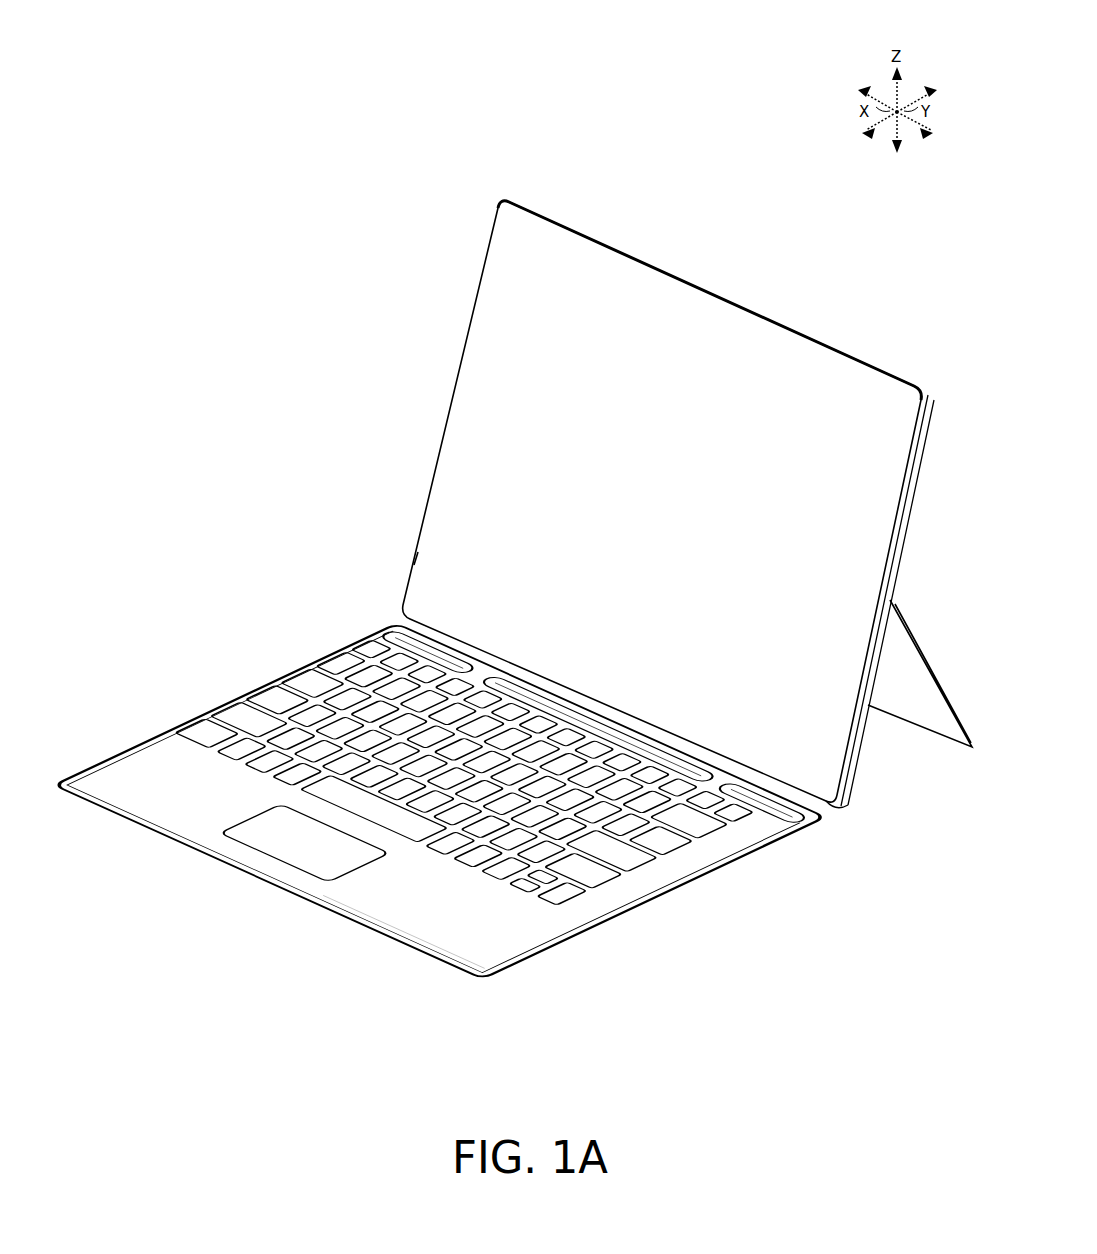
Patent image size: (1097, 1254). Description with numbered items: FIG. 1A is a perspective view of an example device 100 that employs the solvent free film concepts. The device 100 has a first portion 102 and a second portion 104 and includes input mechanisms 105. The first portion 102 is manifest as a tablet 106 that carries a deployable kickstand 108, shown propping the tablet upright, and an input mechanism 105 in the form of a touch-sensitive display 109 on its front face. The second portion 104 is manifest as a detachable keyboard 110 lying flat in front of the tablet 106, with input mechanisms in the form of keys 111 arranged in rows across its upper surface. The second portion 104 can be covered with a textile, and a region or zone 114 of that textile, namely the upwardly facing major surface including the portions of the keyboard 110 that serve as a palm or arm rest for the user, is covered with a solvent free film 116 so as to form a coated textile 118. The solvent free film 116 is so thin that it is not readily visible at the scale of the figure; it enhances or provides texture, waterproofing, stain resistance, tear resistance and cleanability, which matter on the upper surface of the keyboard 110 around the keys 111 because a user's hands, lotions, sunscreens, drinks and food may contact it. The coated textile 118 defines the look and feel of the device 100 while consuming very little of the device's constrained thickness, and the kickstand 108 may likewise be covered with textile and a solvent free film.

The device 100 is at (237, 69).
The first portion 102 is at (503, 177).
The second portion 104 is at (187, 671).
The input mechanism 105 is at (486, 366).
The tablet 106 is at (436, 468).
The kickstand 108 is at (916, 651).
The touch-sensitive display 109 is at (662, 501).
The keyboard 110 is at (621, 888).
The key 111 is at (732, 838).
The zone 114 is at (510, 937).
The solvent free film 116 is at (462, 977).
The coated textile 118 is at (447, 923).